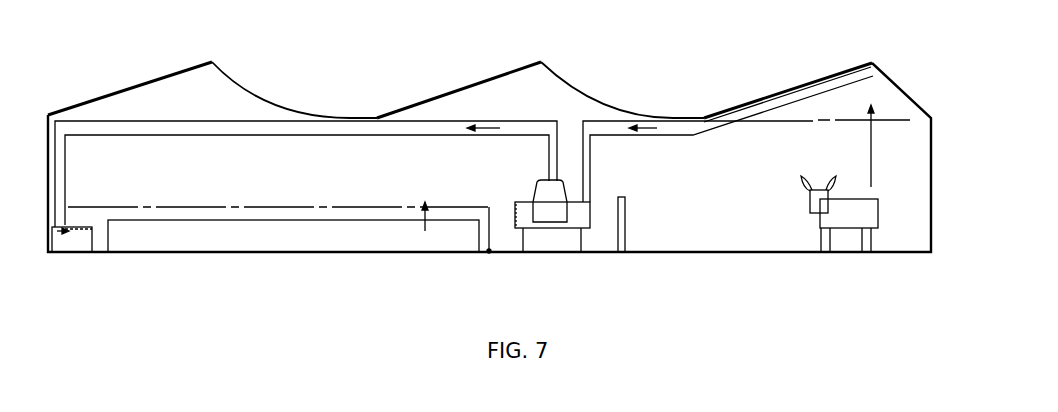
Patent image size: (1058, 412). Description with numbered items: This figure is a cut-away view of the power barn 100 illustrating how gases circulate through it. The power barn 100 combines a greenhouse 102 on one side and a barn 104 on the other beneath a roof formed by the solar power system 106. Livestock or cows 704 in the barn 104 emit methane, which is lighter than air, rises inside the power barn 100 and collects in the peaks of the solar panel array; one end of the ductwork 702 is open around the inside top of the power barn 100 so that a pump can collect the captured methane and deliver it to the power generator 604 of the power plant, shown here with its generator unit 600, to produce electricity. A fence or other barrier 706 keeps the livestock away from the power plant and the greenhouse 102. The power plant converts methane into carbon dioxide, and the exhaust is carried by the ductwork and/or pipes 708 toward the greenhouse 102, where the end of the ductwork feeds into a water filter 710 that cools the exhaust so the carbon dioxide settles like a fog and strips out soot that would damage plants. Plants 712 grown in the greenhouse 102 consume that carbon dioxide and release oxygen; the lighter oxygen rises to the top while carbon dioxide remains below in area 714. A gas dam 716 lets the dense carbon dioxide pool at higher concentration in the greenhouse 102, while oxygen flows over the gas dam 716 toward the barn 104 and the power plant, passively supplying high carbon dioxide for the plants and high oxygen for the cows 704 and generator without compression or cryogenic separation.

The power barn 100 is at (887, 61).
The greenhouse 102 is at (262, 236).
The barn 104 is at (738, 195).
The solar power system 106 is at (815, 80).
The ductwork 702 is at (632, 122).
The ductwork and/or pipes 708 is at (478, 123).
The water filter 710 is at (66, 238).
The plants 712 is at (224, 236).
The area 714 is at (305, 208).
The gas dam 716 is at (493, 230).
The generator 600 is at (552, 218).
The power generator 604 is at (578, 222).
The fence or other barrier 706 is at (627, 222).
The livestock or cows 704 is at (850, 212).